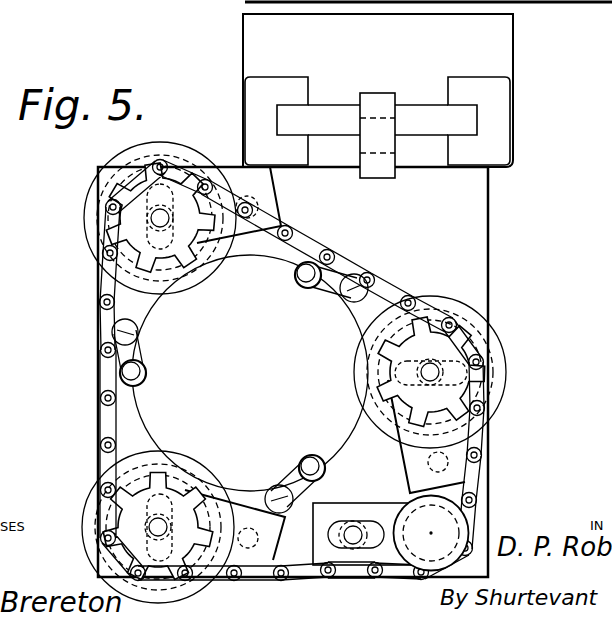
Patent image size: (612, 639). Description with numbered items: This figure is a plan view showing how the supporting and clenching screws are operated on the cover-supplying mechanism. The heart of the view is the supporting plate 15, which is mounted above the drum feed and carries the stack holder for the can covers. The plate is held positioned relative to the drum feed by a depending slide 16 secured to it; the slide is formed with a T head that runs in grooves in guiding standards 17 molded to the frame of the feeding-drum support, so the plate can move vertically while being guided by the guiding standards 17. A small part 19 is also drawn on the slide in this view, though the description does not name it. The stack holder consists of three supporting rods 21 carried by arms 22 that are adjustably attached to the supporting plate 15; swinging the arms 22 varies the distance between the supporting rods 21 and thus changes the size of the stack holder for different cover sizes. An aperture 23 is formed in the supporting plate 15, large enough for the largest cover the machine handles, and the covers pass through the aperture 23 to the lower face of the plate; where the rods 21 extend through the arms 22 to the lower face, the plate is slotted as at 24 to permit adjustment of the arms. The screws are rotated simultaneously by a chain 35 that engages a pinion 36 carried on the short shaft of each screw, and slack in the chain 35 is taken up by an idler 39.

The supporting plate 15 is at (475, 220).
The depending slide 16 is at (378, 123).
The guiding standards 17 is at (537, 115).
The pin 19 is at (373, 105).
The supporting rods 21 is at (300, 288).
The arms 22 is at (335, 292).
The aperture 23 is at (290, 250).
The slot 24 is at (328, 243).
The chain 35 is at (398, 297).
The pinion 36 is at (133, 235).
The idler 39 is at (458, 535).